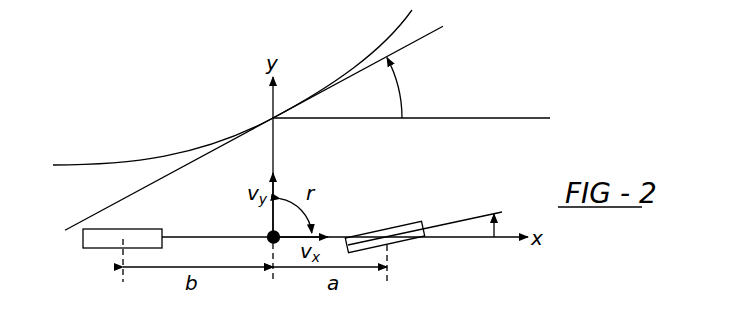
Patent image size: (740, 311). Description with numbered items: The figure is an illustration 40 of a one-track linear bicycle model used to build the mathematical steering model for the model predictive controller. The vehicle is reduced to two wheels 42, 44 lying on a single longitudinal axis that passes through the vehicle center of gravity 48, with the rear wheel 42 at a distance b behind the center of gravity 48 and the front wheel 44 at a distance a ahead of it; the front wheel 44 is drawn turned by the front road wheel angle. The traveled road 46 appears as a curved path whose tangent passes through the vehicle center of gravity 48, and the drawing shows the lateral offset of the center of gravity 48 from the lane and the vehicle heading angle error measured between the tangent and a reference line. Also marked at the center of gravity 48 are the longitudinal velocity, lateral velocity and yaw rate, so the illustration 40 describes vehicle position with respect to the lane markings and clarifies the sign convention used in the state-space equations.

The illustration 40 is at (520, 48).
The wheel 42 is at (145, 229).
The wheel 44 is at (397, 223).
The traveled road 46 is at (382, 42).
The vehicle center of gravity 48 is at (268, 235).